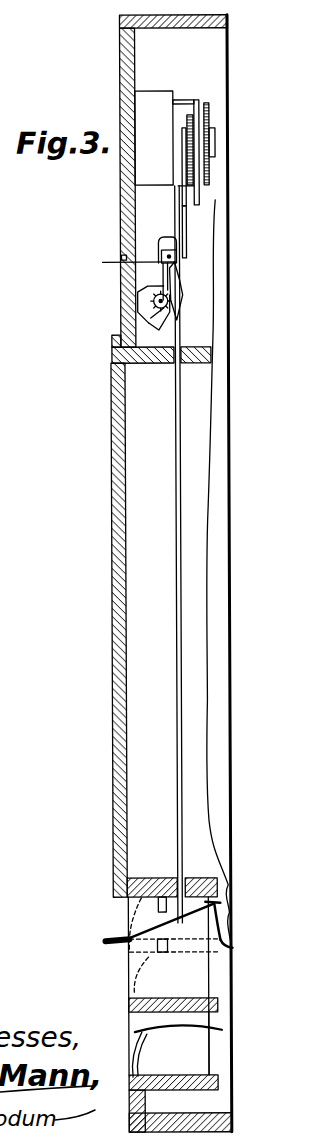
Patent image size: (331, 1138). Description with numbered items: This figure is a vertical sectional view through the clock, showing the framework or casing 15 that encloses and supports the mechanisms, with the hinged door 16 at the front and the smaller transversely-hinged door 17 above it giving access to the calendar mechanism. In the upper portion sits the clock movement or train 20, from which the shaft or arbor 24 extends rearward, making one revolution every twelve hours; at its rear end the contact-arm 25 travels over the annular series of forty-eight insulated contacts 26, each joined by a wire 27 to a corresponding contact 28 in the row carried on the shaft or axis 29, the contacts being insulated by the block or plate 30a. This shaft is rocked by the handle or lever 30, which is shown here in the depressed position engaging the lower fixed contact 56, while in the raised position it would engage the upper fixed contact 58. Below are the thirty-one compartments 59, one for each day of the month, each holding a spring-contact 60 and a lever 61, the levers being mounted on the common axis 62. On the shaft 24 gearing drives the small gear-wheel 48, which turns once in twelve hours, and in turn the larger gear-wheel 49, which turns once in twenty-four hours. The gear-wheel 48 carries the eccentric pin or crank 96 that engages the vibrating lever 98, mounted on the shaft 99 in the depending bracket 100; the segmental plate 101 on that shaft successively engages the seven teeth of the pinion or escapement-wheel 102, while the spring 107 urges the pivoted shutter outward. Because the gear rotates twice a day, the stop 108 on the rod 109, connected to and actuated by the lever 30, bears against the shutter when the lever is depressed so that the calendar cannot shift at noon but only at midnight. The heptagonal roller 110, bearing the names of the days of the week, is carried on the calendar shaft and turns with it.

The framework or casing 15 is at (208, 624).
The hinged door 16 is at (113, 588).
The transversely-hinged door 17 is at (122, 302).
The clock movement or train 20 is at (152, 100).
The shaft or arbor 24 is at (197, 148).
The contact-arm 25 is at (217, 136).
The insulated contacts 26 is at (210, 166).
The wire 27 is at (206, 756).
The contacts 28 is at (219, 932).
The shaft or axis 29 is at (217, 907).
The handle or lever 30 is at (182, 930).
The insulating block or plate 30a is at (220, 939).
The gear-wheel 48 is at (190, 128).
The gear-wheel 49 is at (186, 187).
The fixed contact 56 is at (164, 951).
The fixed contact 58 is at (162, 895).
The compartments 59 is at (190, 1043).
The spring-contact 60 is at (178, 1029).
The lever 61 is at (138, 1056).
The common axis 62 is at (141, 1029).
The eccentric pin or crank 96 is at (186, 135).
The vibrating lever 98 is at (187, 233).
The shaft 99 is at (180, 256).
The depending bracket 100 is at (178, 236).
The segmental plate 101 is at (129, 261).
The pinion or escapement-wheel 102 is at (156, 306).
The spring 107 is at (148, 291).
The stop 108 is at (150, 272).
The rod 109 is at (184, 481).
The second roller 110 is at (150, 320).